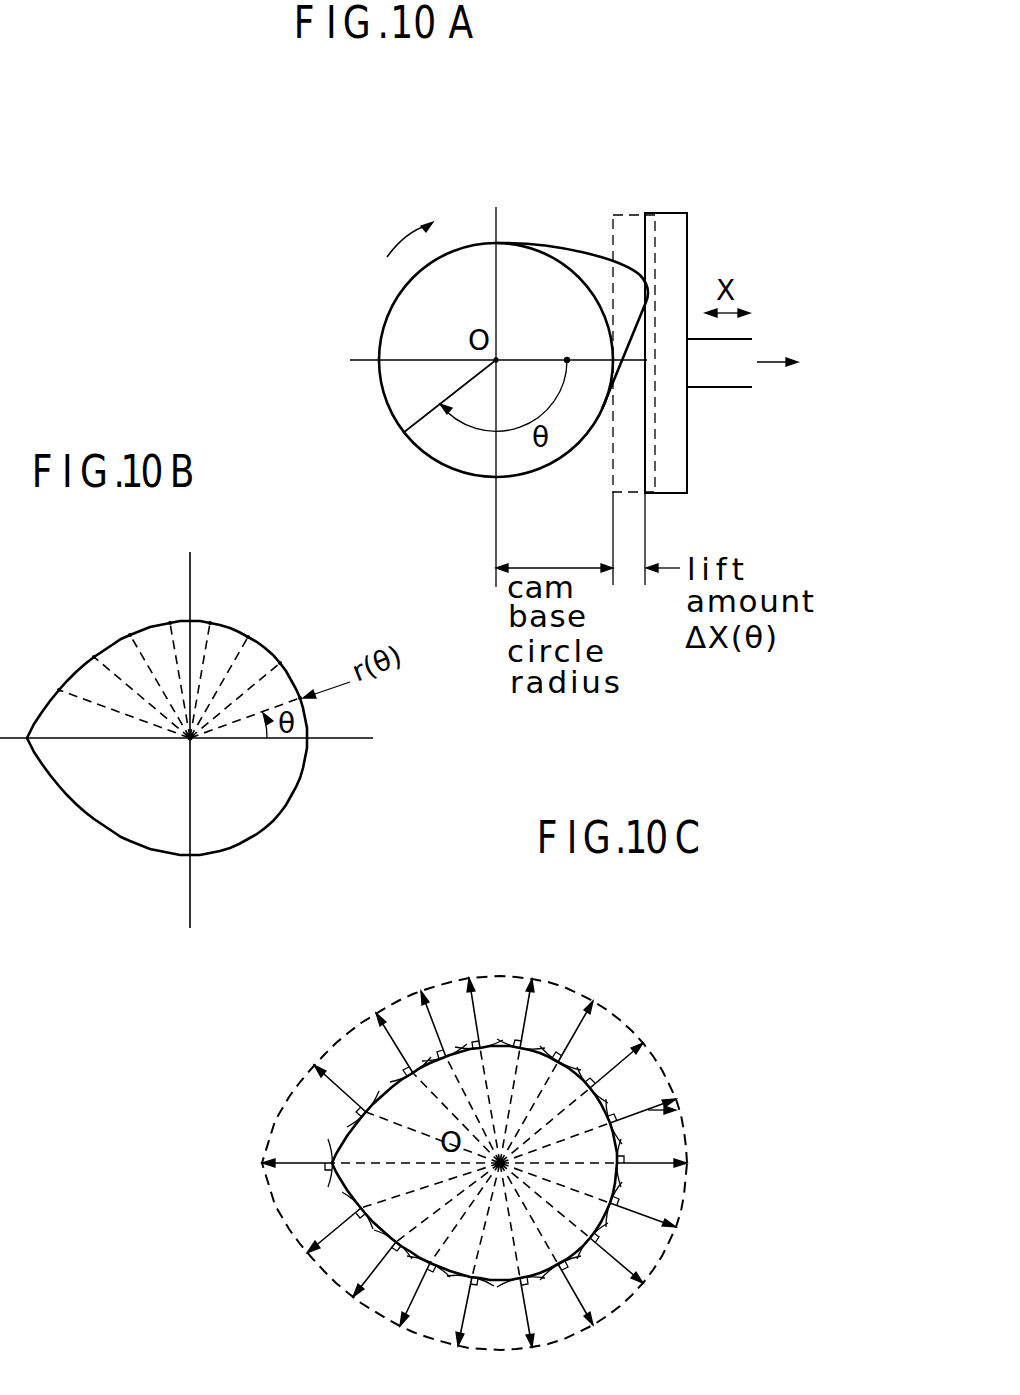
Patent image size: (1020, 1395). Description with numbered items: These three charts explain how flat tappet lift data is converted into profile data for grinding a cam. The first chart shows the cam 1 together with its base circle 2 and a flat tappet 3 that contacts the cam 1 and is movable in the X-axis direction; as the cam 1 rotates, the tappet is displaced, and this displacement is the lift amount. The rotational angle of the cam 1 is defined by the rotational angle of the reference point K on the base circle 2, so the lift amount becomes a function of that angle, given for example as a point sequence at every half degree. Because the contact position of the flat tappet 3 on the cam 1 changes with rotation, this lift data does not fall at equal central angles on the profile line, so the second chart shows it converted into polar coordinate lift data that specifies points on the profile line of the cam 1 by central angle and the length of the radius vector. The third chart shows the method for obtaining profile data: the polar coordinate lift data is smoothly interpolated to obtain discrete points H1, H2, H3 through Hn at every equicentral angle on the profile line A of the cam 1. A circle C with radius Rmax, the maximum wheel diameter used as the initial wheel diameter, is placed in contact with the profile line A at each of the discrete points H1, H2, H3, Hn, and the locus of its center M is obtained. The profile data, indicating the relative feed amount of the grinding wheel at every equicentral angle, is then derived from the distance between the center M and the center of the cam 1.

In FIG. 10A, the cam 1 is at (568, 231).
In FIG. 10C, the cam 1 is at (628, 1100).
In FIG. 10A, the base circle 2 is at (440, 467).
In FIG. 10A, the flat tappet 3 is at (683, 212).
In FIG. 10A, the reference point K is at (403, 438).
In FIG. 10C, the circle C is at (553, 1012).
In FIG. 10C, the profile line A is at (587, 1068).
In FIG. 10C, the center of circle M is at (613, 1015).
In FIG. 10C, the discrete point H1 is at (685, 1187).
In FIG. 10C, the discrete point H2 is at (613, 1135).
In FIG. 10C, the discrete point H3 is at (613, 1092).
In FIG. 10C, the discrete point Hn is at (640, 1250).
In FIG. 10C, the maximum wheel diameter Rmax is at (655, 1097).